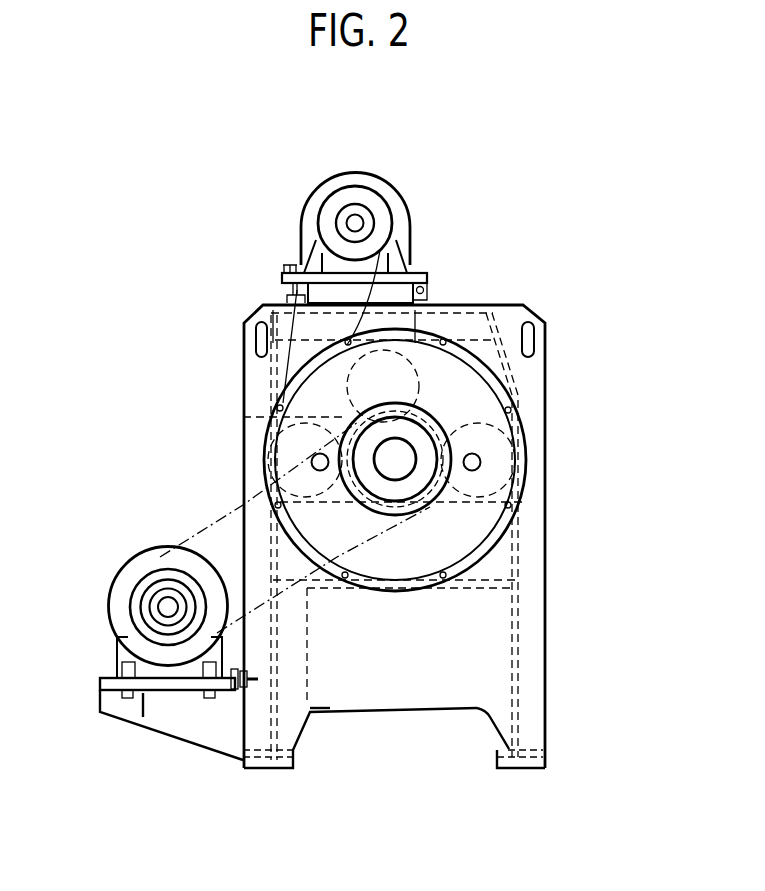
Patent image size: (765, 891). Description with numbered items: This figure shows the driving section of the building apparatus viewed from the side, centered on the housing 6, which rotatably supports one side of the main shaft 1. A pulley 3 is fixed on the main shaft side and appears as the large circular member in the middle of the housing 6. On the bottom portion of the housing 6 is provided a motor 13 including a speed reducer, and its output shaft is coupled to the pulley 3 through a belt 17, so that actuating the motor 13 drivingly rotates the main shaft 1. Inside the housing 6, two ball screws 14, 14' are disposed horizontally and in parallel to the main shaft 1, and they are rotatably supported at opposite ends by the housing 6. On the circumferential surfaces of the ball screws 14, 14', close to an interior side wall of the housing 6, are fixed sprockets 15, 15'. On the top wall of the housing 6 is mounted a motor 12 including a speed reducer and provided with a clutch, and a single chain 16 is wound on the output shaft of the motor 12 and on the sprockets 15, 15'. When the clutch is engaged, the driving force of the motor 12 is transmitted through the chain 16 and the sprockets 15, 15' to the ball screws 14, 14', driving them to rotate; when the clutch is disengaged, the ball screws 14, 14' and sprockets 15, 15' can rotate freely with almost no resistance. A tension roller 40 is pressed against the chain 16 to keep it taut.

The main shaft 1 is at (406, 445).
The pulley 3 is at (437, 510).
The housing 6 is at (541, 398).
The motor 12 is at (347, 171).
The motor 13 is at (117, 588).
The ball screw 14 is at (557, 454).
The ball screw 14' is at (328, 496).
The sprocket 15 is at (464, 505).
The sprocket 15' is at (238, 389).
The chain 16 is at (428, 340).
The belt 17 is at (243, 505).
The tension roller 40 is at (418, 365).